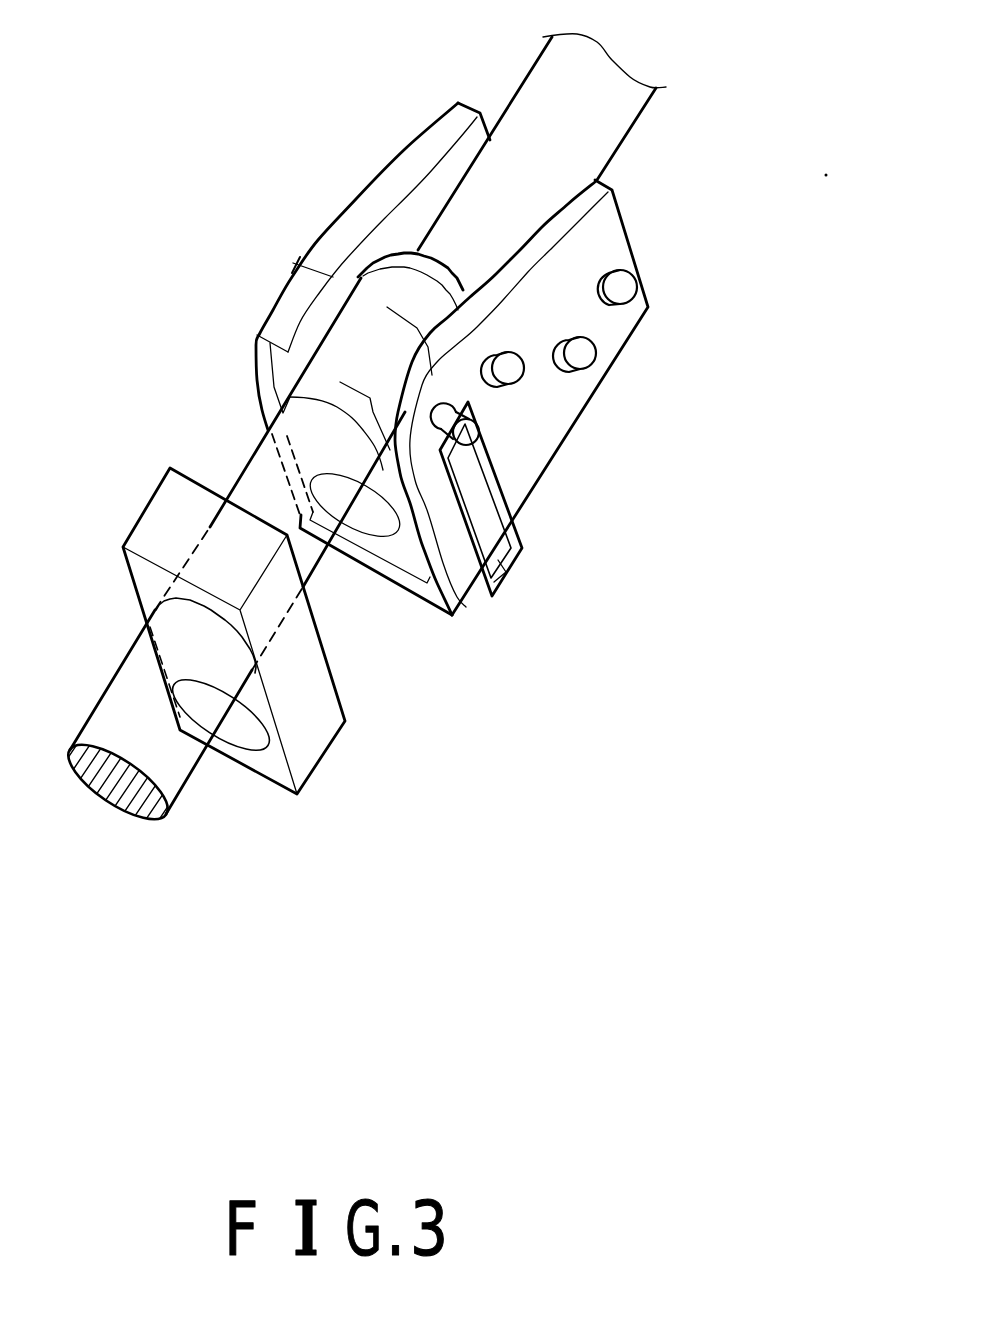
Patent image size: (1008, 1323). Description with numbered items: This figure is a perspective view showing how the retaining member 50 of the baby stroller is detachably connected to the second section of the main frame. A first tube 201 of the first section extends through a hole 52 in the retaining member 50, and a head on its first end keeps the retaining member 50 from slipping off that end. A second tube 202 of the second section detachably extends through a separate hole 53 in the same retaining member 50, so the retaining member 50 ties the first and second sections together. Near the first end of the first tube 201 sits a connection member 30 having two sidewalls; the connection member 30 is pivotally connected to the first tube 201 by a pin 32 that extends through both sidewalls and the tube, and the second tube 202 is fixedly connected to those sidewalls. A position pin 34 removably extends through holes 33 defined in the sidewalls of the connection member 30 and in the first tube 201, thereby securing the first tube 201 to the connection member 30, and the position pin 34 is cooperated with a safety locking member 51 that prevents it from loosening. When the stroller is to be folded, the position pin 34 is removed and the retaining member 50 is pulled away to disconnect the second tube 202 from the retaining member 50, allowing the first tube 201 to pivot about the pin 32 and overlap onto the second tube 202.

The first tube 201 is at (113, 703).
The second tube 202 is at (516, 105).
The connection member 30 is at (578, 435).
The pin 32 is at (510, 371).
The hole 33 is at (450, 422).
The position pin 34 is at (470, 434).
The retaining member 50 is at (221, 672).
The safety locking member 51 is at (483, 595).
The hole 52 is at (170, 606).
The hole 53 is at (237, 735).